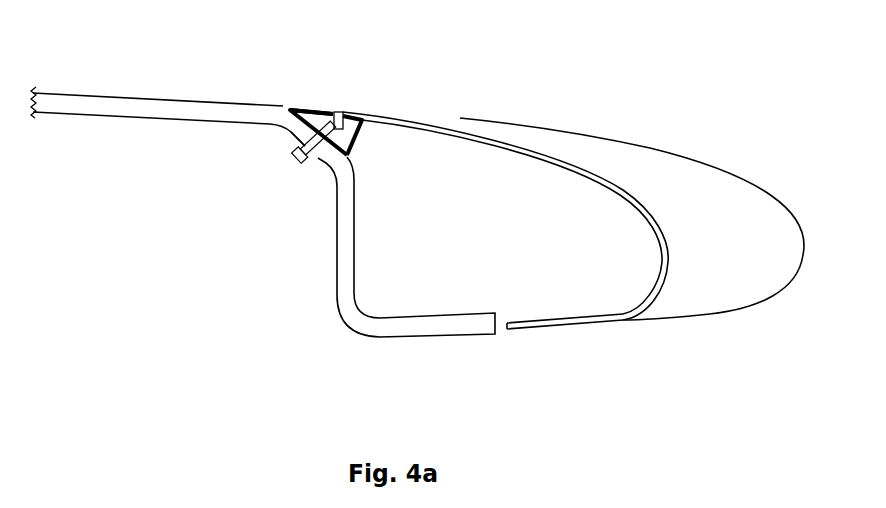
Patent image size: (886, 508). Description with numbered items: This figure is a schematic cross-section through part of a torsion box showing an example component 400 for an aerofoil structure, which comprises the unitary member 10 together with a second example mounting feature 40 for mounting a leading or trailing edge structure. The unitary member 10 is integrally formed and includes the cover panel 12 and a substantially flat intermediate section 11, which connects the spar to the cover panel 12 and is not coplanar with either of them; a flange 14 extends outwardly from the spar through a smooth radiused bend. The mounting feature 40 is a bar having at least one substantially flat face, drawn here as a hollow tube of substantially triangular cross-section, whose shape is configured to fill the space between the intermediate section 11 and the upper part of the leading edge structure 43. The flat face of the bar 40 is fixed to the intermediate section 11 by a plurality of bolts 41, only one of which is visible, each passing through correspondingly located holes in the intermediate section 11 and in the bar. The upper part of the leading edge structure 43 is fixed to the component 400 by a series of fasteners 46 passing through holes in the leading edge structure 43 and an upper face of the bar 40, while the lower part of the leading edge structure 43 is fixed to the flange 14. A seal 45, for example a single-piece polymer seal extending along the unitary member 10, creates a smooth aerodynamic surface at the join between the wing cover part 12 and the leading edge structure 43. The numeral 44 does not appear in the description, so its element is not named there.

The unitary member 10 is at (184, 67).
The component for an aerofoil structure 400 is at (168, 312).
The cover panel 12 is at (143, 110).
The intermediate section 11 is at (297, 127).
The seal 45 is at (297, 110).
The bolt 41 is at (310, 110).
The fastener 46 is at (339, 113).
The mounting feature 40 is at (330, 158).
The flange 14 is at (410, 336).
The double wall section 44 is at (408, 118).
The leading edge structure 43 is at (688, 138).